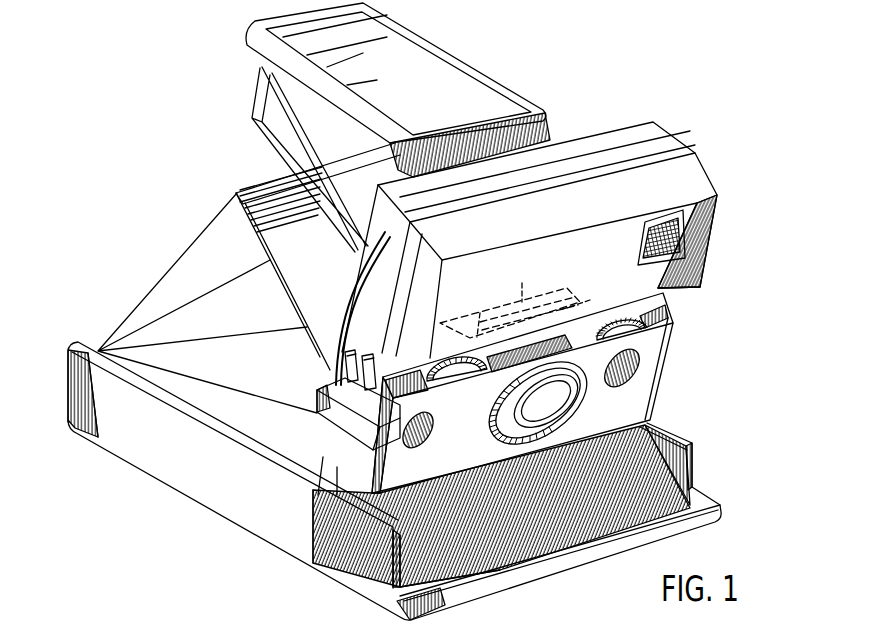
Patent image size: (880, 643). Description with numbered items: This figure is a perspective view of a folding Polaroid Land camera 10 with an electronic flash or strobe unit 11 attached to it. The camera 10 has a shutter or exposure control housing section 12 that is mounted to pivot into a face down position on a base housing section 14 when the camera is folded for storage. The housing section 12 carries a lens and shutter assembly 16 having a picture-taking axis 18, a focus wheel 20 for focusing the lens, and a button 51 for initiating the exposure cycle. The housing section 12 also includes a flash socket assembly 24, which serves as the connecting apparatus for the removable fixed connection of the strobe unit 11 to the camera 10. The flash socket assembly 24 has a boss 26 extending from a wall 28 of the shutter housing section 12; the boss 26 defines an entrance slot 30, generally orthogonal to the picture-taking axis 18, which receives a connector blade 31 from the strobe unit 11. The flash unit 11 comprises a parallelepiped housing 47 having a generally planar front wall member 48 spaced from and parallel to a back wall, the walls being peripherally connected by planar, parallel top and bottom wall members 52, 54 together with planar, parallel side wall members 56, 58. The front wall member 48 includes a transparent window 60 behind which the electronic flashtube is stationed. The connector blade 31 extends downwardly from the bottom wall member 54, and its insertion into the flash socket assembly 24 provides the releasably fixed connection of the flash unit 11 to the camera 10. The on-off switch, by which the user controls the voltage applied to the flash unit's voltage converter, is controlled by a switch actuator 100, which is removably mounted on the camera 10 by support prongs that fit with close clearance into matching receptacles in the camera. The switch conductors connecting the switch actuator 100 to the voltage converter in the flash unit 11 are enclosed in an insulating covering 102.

The camera 10 is at (526, 394).
The electronic flash unit 11 is at (556, 224).
The shutter or exposure control housing section 12 is at (647, 403).
The base housing section 14 is at (718, 513).
The lens and shutter assembly 16 is at (500, 438).
The picture-taking axis 18 is at (573, 448).
The focus wheel 20 is at (468, 378).
The flash socket assembly 24 is at (592, 302).
The boss 26 is at (523, 300).
The wall 28 is at (413, 367).
The entrance slot 30 is at (486, 310).
The connector blade 31 is at (568, 312).
The parallelepiped housing 47 is at (482, 145).
The front wall member 48 is at (548, 275).
The button 51 is at (420, 441).
The top wall member 52 is at (636, 133).
The bottom wall member 54 is at (677, 289).
The side wall member 56 is at (713, 225).
The transparent window 60 is at (688, 240).
The side wall member 58 is at (376, 321).
The switch actuator 100 is at (318, 412).
The insulating covering 102 is at (332, 354).